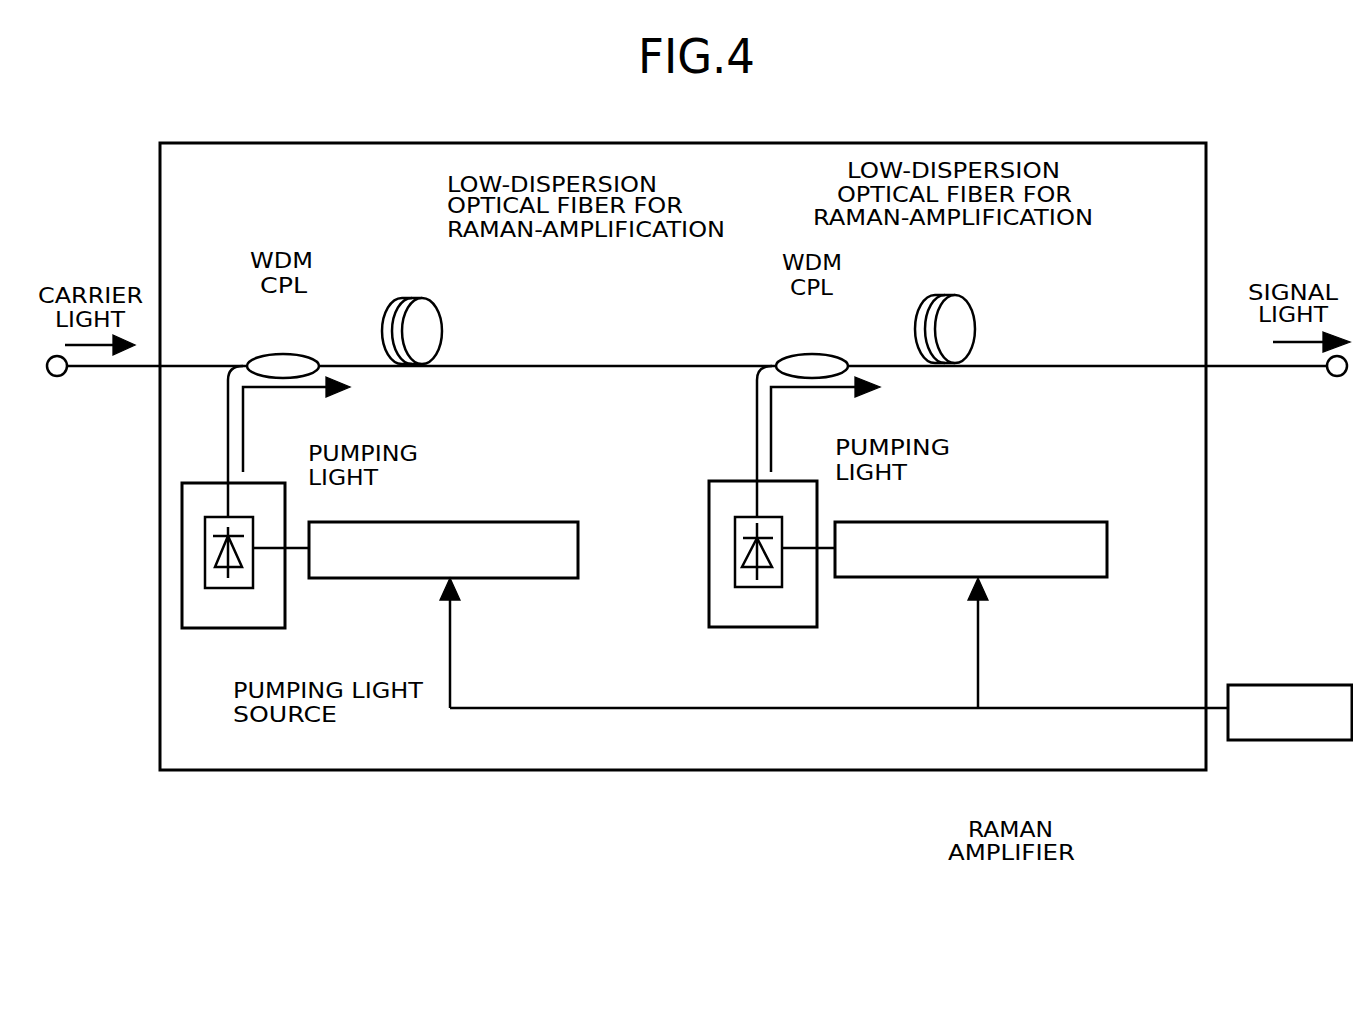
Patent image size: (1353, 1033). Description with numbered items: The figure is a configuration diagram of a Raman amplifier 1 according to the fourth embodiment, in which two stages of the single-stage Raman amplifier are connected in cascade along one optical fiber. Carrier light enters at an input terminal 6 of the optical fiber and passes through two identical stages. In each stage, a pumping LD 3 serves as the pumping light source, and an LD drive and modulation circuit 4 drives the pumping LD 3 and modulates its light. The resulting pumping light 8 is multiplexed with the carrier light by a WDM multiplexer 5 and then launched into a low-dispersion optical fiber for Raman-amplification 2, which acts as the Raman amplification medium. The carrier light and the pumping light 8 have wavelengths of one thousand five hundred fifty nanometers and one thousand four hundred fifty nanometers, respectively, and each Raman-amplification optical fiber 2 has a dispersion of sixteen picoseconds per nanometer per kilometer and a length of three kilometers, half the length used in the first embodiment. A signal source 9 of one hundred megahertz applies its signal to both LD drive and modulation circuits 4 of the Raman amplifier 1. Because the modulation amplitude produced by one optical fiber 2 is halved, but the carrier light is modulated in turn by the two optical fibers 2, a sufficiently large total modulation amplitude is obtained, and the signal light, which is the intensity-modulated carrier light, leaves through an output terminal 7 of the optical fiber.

The Raman amplifier 1 is at (1018, 770).
The low-dispersion optical fiber for Raman-amplification 2 is at (423, 297).
The pumping LD 3 is at (230, 628).
The LD drive and modulation circuit 4 is at (475, 522).
The WDM multiplexer 5 is at (287, 354).
The input terminal 6 is at (120, 366).
The output terminal 7 is at (1287, 366).
The pumping light 8 is at (305, 390).
The signal source 9 is at (1313, 685).